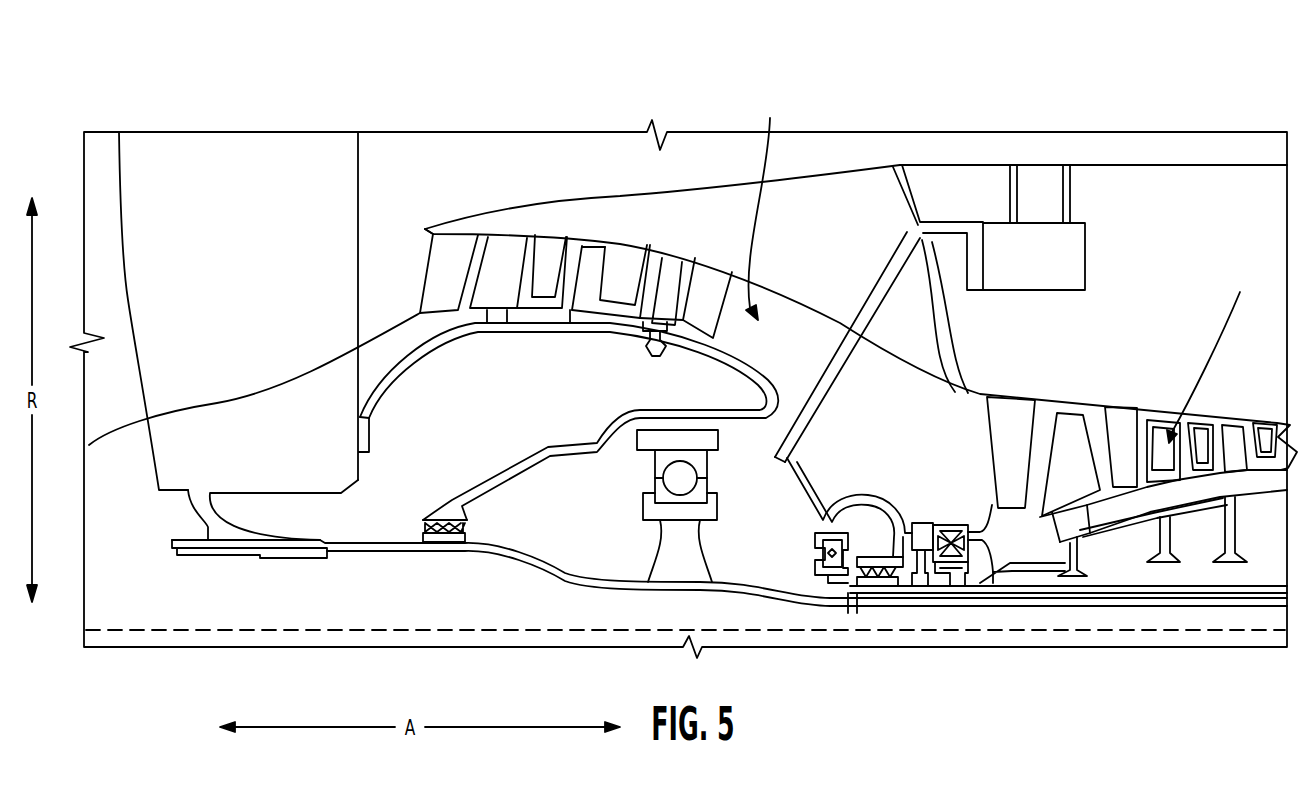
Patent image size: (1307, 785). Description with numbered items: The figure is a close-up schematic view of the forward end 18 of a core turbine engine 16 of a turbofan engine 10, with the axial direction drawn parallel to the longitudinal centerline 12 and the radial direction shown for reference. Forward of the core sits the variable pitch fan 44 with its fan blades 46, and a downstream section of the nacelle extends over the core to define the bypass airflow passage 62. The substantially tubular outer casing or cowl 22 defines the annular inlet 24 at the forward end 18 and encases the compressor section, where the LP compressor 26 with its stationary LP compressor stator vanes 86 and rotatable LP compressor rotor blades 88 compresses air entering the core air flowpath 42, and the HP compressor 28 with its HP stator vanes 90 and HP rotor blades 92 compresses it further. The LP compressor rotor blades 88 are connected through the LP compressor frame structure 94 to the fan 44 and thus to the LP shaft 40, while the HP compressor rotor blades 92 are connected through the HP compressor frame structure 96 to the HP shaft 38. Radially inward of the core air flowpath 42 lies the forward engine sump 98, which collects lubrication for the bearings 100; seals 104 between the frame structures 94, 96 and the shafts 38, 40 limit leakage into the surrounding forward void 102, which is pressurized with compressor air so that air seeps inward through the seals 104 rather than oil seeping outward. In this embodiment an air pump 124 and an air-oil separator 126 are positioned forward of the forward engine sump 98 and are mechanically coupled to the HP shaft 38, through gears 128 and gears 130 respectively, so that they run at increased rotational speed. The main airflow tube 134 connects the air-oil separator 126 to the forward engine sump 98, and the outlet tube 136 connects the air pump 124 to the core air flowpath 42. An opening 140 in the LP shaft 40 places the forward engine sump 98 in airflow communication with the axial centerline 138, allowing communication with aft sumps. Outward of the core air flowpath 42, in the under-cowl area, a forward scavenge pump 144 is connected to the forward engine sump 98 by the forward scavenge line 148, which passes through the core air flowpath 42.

The turbofan engine 10 is at (246, 70).
The longitudinal centerline 12 is at (201, 632).
The core turbine engine 16 is at (1082, 93).
The forward end 18 is at (566, 125).
The outer casing or cowl 22 is at (950, 163).
The annular inlet 24 is at (414, 247).
The low pressure (LP) compressor 26 is at (616, 218).
The high pressure (HP) compressor 28 is at (1108, 370).
The high pressure (HP) shaft or spool 38 is at (1218, 592).
The low pressure (LP) shaft or spool 40 is at (580, 584).
The core air flowpath 42 is at (999, 264).
The variable pitch fan 44 is at (88, 256).
The fan blades 46 is at (214, 261).
The bypass airflow passage 62 is at (828, 148).
The LP compressor stator vanes 86 is at (553, 240).
The LP compressor rotor blades 88 is at (668, 272).
The HP stator vanes 90 is at (1125, 415).
The HP rotor blades 92 is at (1203, 424).
The LP compressor frame structure 94 is at (413, 352).
The HP compressor frame structure 96 is at (1105, 540).
The forward engine sump 98 is at (538, 529).
The bearings 100 is at (685, 470).
The forward void 102 is at (487, 404).
The seals 104 is at (406, 529).
The air pump 124 is at (947, 525).
The air-oil separator 126 is at (914, 522).
The gears 128 is at (947, 586).
The gears 130 is at (920, 586).
The main airflow tube 134 is at (850, 498).
The outlet tube 136 is at (985, 586).
The axial centerline 138 is at (1001, 642).
The opening 140 is at (851, 625).
The forward scavenge pump 144 is at (1082, 258).
The forward scavenge line 148 is at (835, 357).